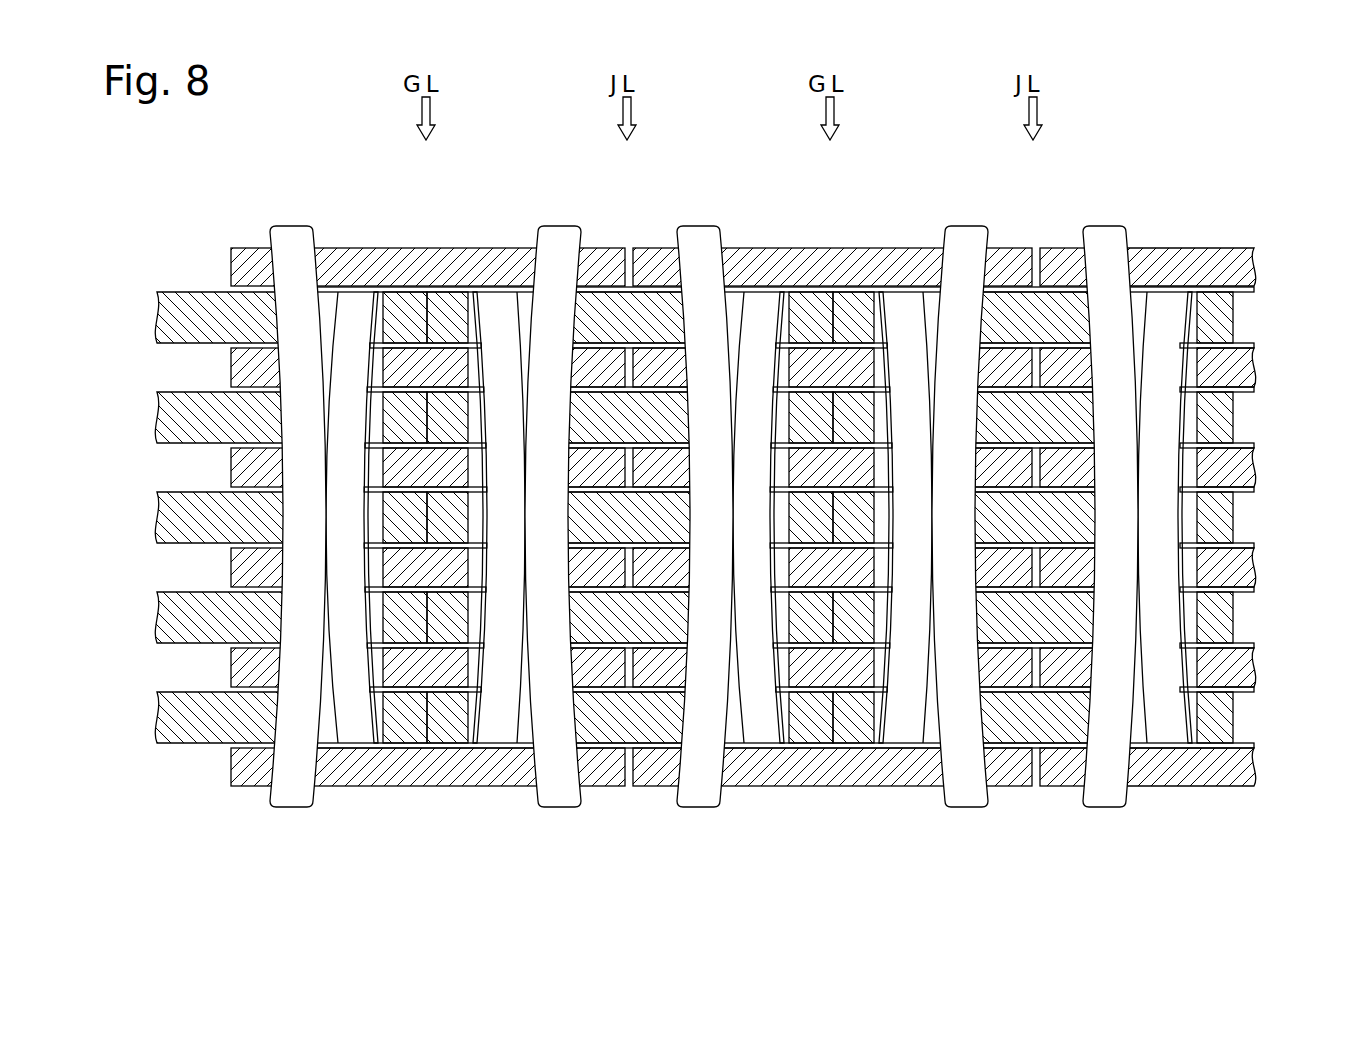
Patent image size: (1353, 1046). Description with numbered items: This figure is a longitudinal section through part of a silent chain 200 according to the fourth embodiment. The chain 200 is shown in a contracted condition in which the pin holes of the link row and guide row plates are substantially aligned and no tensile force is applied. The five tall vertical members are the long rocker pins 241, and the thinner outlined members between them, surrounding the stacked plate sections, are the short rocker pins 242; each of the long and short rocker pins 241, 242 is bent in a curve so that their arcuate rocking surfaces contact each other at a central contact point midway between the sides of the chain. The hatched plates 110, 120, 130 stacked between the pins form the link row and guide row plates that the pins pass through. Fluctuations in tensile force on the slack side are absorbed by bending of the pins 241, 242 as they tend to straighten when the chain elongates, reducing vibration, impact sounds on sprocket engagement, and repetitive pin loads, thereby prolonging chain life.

The silent chain 200 is at (1140, 86).
The first conductive layer 110 is at (190, 307).
The second conductive layer 120 is at (428, 370).
The insulating layer 130 is at (388, 265).
The long rocker pin 241 is at (293, 787).
The short rocker pin 242 is at (356, 715).